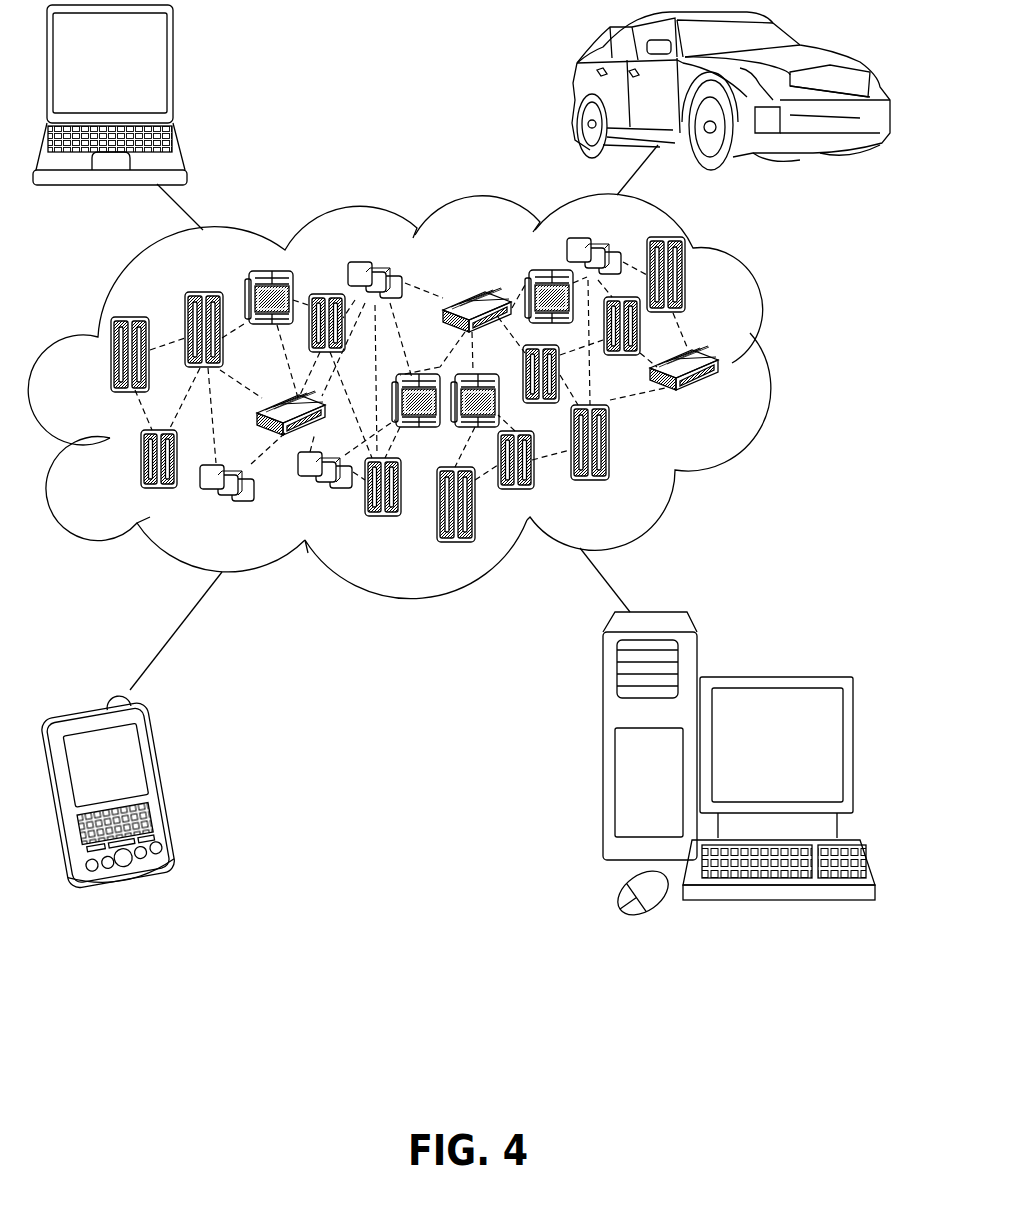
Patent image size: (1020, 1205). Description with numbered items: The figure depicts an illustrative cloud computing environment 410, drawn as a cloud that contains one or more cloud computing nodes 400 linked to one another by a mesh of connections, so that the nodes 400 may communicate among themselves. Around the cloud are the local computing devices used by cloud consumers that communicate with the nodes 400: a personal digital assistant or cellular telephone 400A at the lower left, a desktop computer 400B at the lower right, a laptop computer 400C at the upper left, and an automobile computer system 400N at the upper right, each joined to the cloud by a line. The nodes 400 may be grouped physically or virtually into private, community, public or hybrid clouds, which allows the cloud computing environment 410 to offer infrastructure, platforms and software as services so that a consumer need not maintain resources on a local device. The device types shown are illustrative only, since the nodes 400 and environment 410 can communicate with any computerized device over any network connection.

The cloud computing nodes 400 is at (435, 396).
The cloud computing environment 410 is at (780, 362).
The personal digital assistant (PDA) or cellular telephone 400A is at (163, 780).
The desktop computer 400B is at (775, 675).
The laptop computer 400C is at (175, 73).
The automobile computer system 400N is at (572, 92).